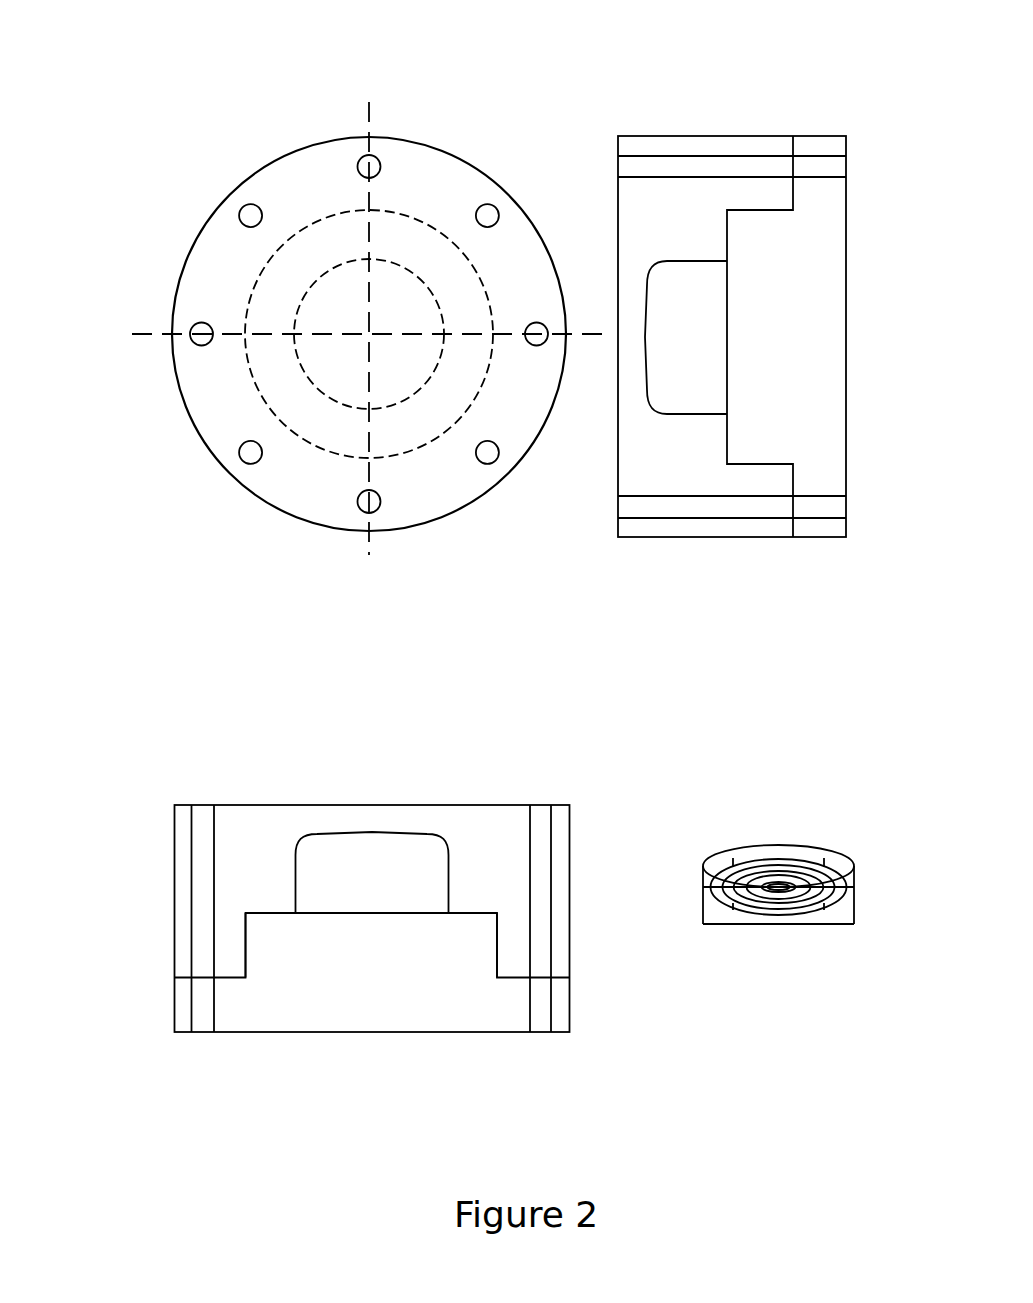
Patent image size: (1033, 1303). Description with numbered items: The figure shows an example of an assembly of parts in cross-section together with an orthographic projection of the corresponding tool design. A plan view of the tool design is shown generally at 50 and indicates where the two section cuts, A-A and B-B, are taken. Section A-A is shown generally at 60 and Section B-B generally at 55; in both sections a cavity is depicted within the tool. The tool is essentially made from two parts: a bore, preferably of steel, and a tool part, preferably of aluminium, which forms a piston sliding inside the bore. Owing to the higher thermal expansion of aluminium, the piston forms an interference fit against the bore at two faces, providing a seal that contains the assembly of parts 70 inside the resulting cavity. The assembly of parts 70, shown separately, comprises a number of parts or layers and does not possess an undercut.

The plan view of tool design 50 is at (237, 167).
The Section A-A 60 is at (752, 301).
The Section B-B 55 is at (378, 944).
The assembly of parts 70 is at (840, 848).